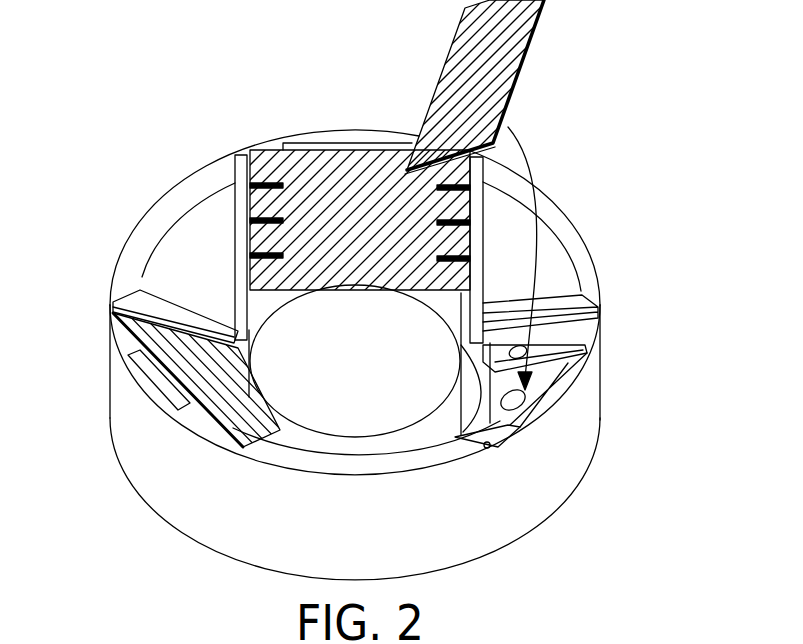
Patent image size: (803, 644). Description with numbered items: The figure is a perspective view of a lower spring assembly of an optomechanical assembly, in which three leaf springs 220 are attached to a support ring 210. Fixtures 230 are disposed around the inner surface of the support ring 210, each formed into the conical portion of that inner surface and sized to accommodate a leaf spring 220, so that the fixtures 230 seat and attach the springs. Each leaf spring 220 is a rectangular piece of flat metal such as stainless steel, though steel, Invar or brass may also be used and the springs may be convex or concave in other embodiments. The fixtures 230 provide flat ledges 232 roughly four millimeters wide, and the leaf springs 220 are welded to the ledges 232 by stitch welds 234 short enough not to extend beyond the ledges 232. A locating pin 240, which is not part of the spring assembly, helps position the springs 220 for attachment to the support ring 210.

The support ring 210 is at (583, 415).
The leaf spring 220 is at (468, 68).
The fixture 230 is at (587, 367).
The ledge 232 is at (603, 332).
The stitch weld 234 is at (250, 220).
The locating pin 240 is at (330, 403).